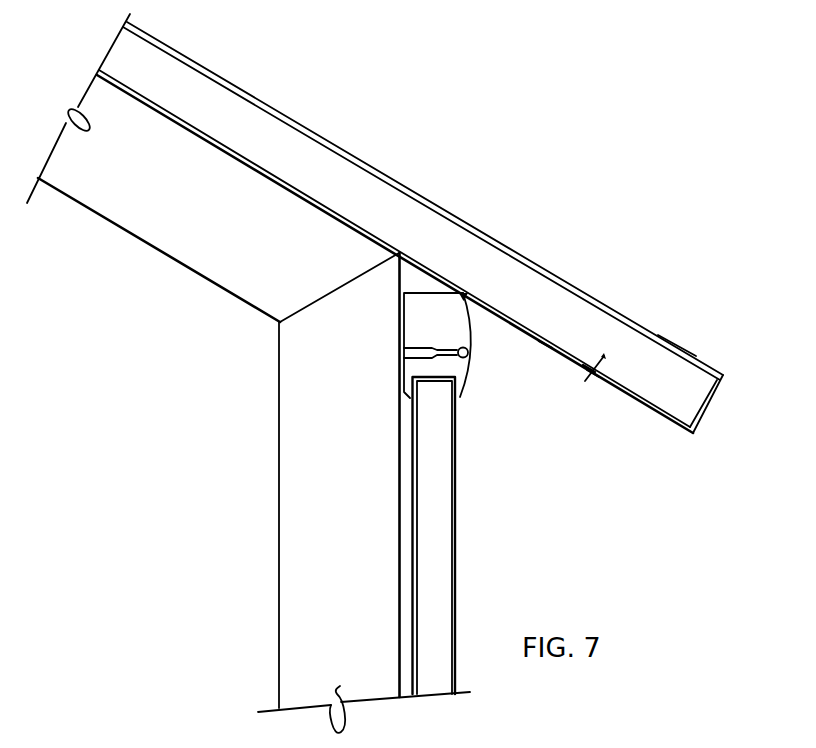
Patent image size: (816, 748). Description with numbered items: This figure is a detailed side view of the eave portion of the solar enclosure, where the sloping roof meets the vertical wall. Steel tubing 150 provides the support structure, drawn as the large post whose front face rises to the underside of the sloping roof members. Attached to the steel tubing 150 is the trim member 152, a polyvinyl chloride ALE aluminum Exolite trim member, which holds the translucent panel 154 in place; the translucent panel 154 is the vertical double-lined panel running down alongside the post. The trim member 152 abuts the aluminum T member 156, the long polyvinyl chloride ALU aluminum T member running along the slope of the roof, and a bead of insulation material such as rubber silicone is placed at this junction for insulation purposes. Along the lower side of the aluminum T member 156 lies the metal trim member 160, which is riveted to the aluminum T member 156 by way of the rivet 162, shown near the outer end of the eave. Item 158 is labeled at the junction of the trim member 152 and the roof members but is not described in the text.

The steel tubing 150 is at (278, 542).
The trim member 152 is at (463, 380).
The translucent panel 154 is at (455, 577).
The aluminum T member 156 is at (266, 103).
The bolt 158 is at (465, 297).
The metal trim member 160 is at (697, 356).
The rivet 162 is at (595, 382).